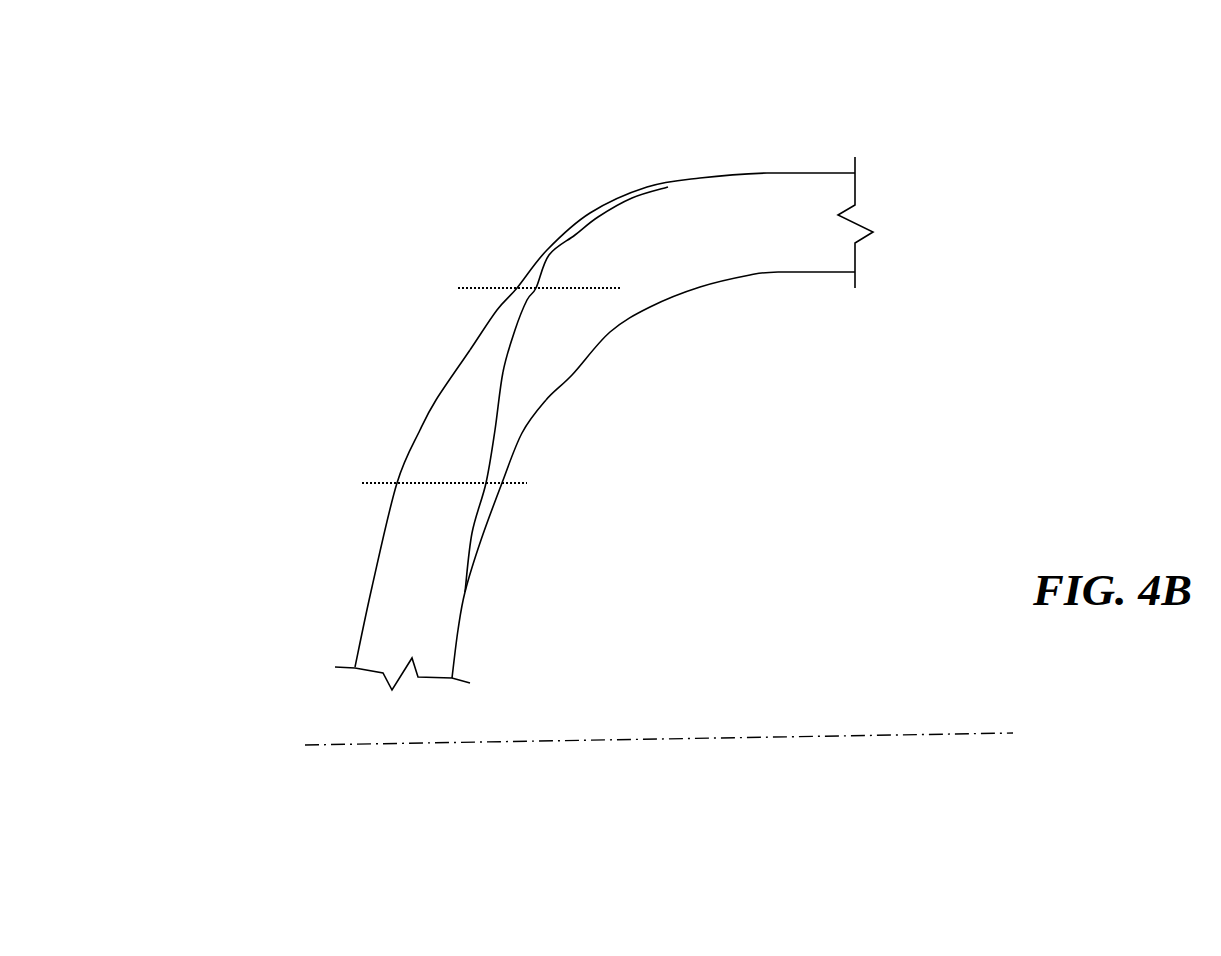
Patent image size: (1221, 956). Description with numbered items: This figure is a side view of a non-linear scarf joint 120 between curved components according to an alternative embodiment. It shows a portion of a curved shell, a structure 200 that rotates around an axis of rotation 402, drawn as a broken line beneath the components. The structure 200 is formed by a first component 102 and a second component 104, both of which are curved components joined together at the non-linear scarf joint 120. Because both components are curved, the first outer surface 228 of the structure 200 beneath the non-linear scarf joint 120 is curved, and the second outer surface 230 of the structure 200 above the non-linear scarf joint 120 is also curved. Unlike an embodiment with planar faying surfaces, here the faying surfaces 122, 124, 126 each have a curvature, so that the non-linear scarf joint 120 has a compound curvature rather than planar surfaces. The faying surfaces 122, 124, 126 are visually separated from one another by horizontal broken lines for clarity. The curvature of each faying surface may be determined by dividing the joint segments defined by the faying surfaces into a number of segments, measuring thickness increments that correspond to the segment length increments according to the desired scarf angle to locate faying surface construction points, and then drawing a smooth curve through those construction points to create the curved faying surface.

The structure 200 is at (235, 79).
The first component 102 is at (372, 587).
The second component 104 is at (778, 267).
The non-linear scarf joint 120 is at (503, 372).
The faying surface 122 is at (473, 533).
The faying surface 124 is at (568, 252).
The faying surface 126 is at (498, 386).
The first outer surface 228 is at (575, 381).
The second outer surface 230 is at (531, 262).
The axis of rotation 402 is at (858, 737).